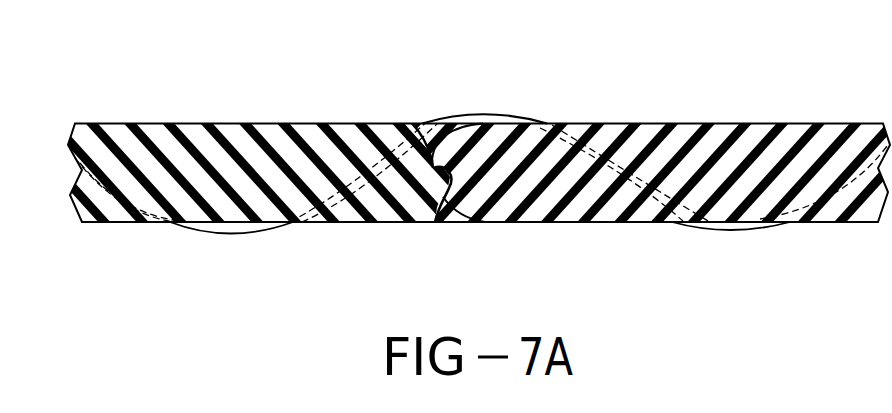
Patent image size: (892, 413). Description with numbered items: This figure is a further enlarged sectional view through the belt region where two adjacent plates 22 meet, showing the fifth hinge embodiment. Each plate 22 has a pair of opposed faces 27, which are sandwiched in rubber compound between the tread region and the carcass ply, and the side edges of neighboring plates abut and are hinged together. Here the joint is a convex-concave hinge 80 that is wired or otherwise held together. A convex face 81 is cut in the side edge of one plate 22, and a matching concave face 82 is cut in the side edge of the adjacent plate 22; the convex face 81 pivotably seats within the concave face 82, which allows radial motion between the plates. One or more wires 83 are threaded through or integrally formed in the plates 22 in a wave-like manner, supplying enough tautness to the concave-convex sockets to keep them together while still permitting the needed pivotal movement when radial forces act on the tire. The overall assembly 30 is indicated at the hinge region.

The plate 22 is at (125, 211).
The face 27 is at (263, 123).
The weld joint 30 is at (497, 52).
The convex-concave hinge 80 is at (455, 98).
The convex face 81 is at (412, 124).
The concave face 82 is at (435, 222).
The wire 83 is at (715, 231).